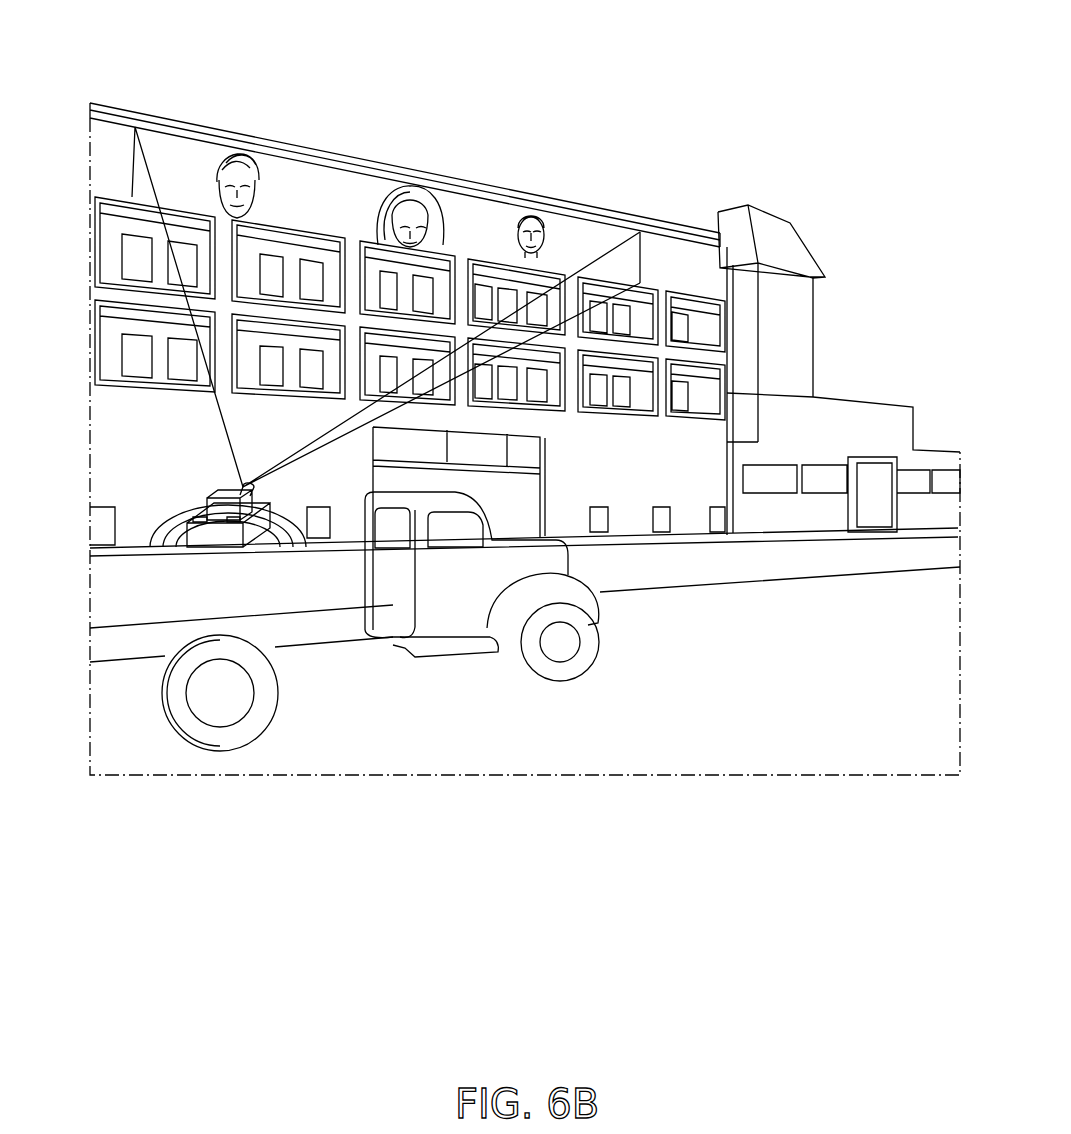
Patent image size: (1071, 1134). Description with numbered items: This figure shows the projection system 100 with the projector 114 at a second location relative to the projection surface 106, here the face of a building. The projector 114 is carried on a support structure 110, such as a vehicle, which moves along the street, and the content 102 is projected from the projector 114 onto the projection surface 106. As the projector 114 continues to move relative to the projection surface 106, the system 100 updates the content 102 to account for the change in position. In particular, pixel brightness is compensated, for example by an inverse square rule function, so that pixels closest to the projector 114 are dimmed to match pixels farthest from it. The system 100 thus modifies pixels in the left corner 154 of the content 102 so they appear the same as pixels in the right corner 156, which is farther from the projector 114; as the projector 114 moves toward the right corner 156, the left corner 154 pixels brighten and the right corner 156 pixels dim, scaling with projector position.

The projection system 100 is at (560, 505).
The content 102 is at (563, 230).
The projection surface 106 is at (647, 268).
The support structure 110 is at (370, 582).
The projector 114 is at (223, 513).
The left corner 154 is at (130, 143).
The right corner 156 is at (655, 247).